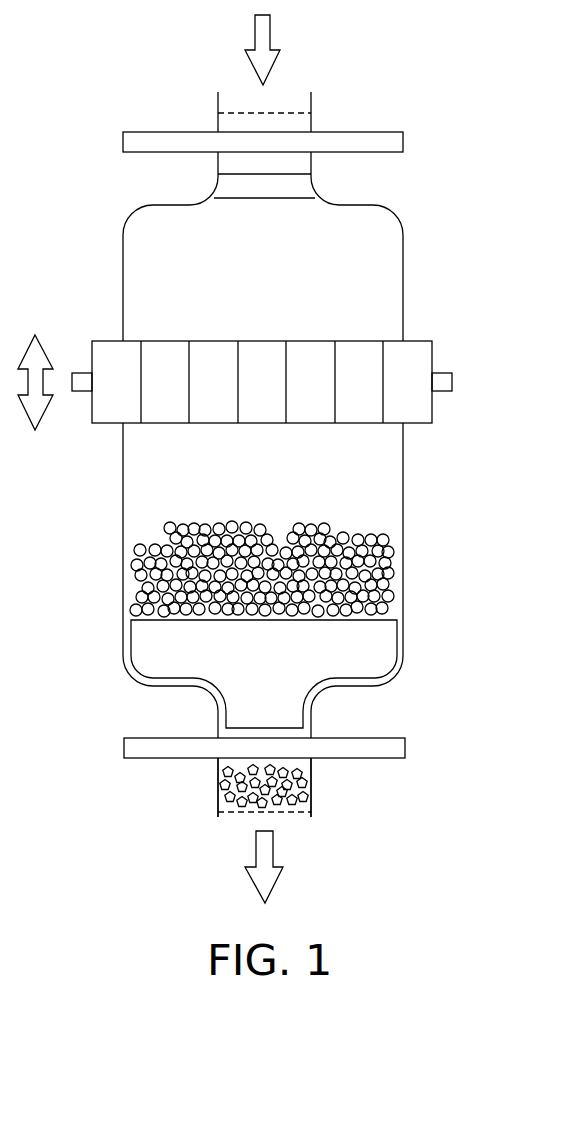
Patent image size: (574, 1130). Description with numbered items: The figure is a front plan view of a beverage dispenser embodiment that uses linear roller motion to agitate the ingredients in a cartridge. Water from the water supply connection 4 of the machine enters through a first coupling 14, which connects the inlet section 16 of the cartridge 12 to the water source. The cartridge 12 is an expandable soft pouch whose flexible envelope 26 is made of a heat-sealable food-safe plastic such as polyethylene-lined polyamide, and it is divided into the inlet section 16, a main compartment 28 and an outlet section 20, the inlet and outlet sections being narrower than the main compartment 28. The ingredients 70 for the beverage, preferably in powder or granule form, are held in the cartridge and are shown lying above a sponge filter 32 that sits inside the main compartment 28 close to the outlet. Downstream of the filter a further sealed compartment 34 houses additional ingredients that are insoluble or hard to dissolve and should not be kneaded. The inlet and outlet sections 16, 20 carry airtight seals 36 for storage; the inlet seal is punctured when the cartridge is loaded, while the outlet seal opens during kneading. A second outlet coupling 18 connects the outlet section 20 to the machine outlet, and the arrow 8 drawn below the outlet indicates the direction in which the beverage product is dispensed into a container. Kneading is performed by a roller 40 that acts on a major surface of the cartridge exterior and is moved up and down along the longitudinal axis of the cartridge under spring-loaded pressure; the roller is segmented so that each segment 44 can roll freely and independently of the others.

The water supply connection 4 is at (266, 33).
The outlet flow arrow 8 is at (268, 852).
The cartridge 12 is at (148, 246).
The first coupling 14 is at (148, 143).
The inlet section 16 is at (300, 162).
The second outlet coupling 18 is at (397, 750).
The outlet section 20 is at (312, 792).
The flexible envelope 26 is at (394, 256).
The main compartment 28 is at (180, 313).
The sponge filter 32 is at (147, 642).
The further sealed compartment 34 is at (222, 783).
The airtight seals 36 is at (233, 112).
The roller 40 is at (313, 352).
The segment 44 is at (262, 407).
The ingredients 70 is at (160, 565).